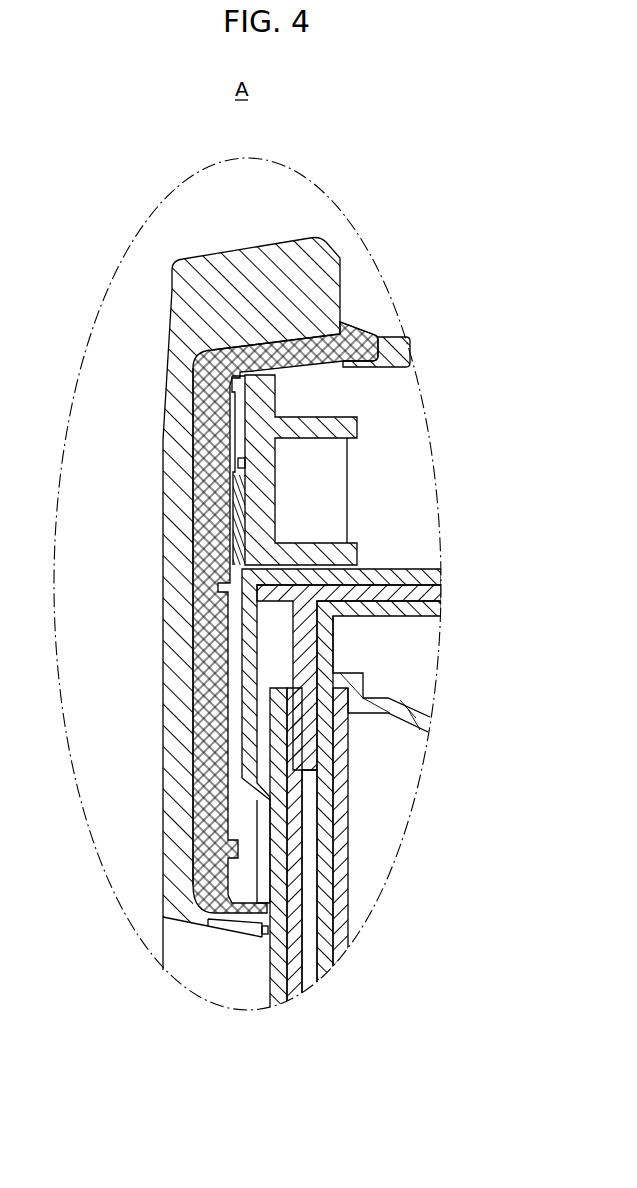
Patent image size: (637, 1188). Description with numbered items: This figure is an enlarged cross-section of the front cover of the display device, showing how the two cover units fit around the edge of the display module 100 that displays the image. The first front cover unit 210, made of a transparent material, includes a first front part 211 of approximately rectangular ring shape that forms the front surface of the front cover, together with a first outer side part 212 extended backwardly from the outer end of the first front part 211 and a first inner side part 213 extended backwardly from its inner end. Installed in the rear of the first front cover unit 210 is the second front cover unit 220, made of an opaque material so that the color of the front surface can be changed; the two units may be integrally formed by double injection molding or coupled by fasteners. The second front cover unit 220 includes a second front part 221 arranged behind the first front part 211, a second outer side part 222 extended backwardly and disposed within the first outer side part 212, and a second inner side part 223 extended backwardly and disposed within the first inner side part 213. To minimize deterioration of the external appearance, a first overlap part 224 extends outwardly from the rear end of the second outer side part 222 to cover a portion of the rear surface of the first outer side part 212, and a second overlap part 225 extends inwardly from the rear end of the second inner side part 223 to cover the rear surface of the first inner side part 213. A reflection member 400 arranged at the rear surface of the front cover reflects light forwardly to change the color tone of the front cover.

The display module 100 is at (363, 812).
The first front cover unit 210 is at (202, 595).
The first front part 211 is at (181, 716).
The first outer side part 212 is at (246, 256).
The first inner side part 213 is at (203, 927).
The second front cover unit 220 is at (261, 605).
The second front part 221 is at (207, 475).
The second outer side part 222 is at (297, 347).
The second inner side part 223 is at (226, 920).
The first overlap part 224 is at (352, 319).
The second overlap part 225 is at (263, 937).
The reflection member 400 is at (354, 479).